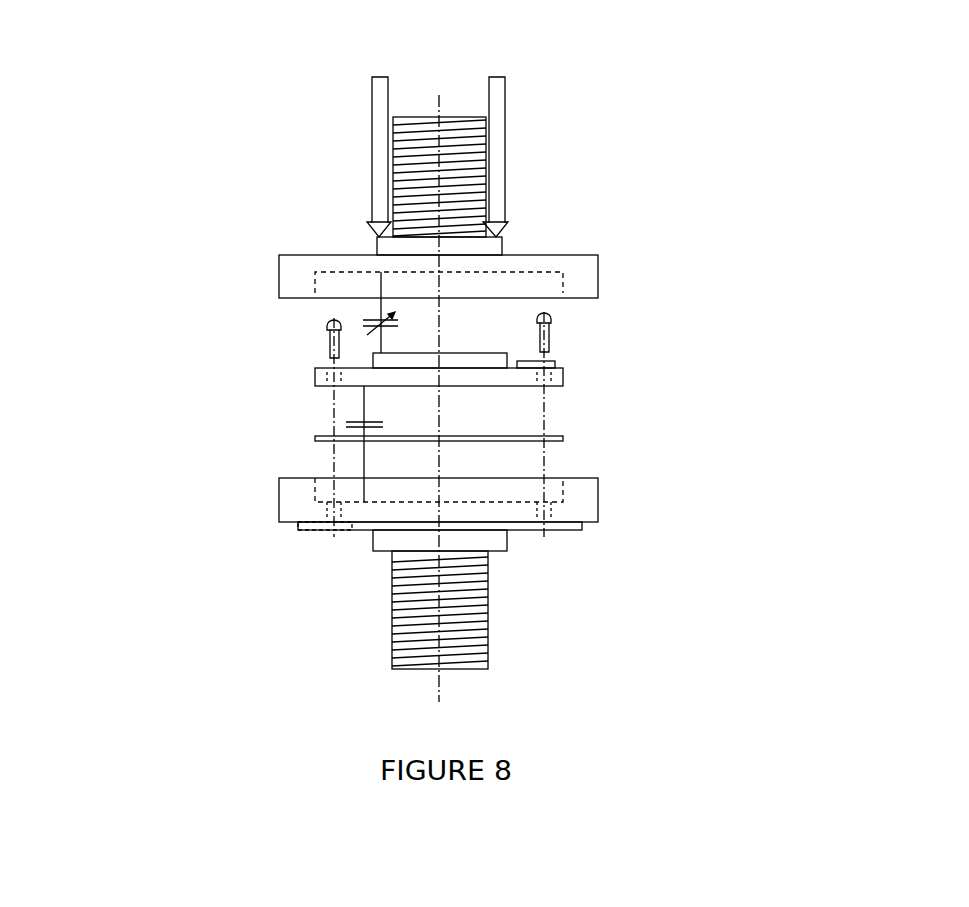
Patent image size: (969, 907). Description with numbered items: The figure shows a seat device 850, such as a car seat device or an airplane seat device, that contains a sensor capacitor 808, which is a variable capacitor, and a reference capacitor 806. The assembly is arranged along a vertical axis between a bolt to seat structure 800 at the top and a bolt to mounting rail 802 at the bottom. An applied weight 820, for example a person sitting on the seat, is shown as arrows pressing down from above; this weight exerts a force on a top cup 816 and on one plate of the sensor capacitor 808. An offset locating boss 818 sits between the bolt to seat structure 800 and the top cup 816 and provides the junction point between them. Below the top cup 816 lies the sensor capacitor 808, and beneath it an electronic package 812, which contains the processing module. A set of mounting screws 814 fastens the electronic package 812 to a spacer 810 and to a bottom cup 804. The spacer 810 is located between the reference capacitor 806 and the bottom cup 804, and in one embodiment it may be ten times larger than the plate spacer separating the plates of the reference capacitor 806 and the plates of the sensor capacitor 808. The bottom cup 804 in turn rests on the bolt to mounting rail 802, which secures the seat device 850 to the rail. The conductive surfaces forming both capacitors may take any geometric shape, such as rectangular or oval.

The bolt to seat structure 800 is at (460, 138).
The bolt to mounting rail 802 is at (480, 610).
The bottom cup 804 is at (590, 502).
The reference capacitor 806 is at (363, 444).
The sensor capacitor 808 is at (380, 303).
The spacer 810 is at (563, 438).
The electronic package 812 is at (552, 380).
The mounting screws 814 is at (553, 333).
The top cup 816 is at (592, 285).
The offset locating boss 818 is at (490, 243).
The applied weight 820 is at (438, 140).
The seat device 850 is at (668, 710).